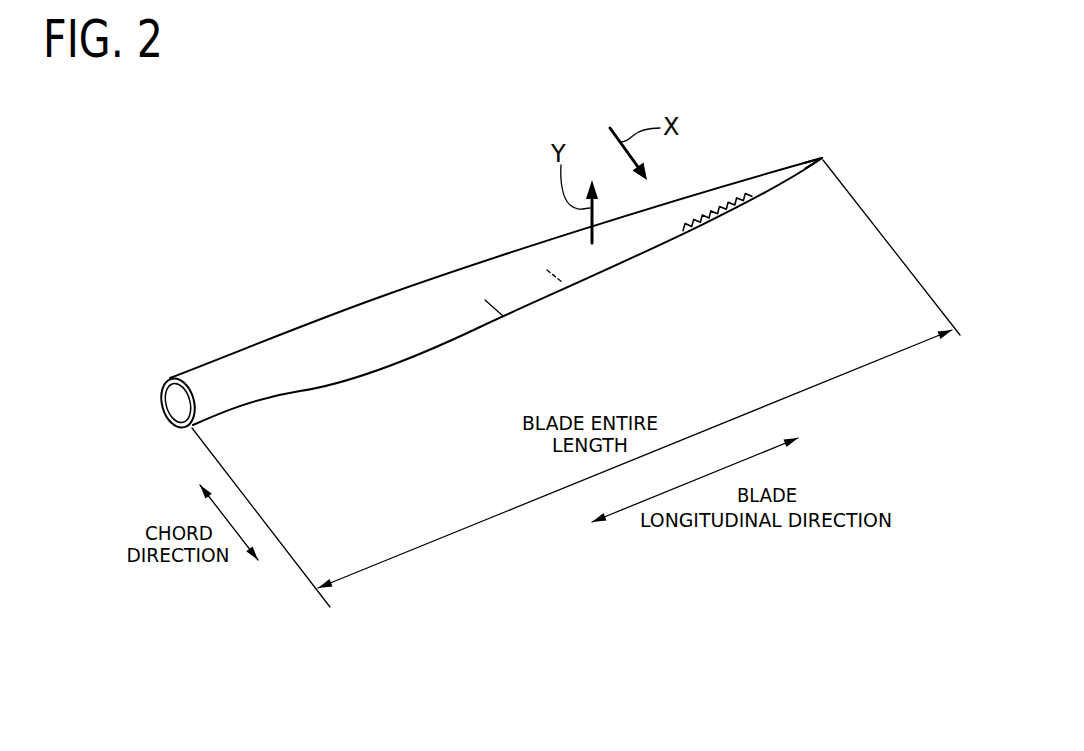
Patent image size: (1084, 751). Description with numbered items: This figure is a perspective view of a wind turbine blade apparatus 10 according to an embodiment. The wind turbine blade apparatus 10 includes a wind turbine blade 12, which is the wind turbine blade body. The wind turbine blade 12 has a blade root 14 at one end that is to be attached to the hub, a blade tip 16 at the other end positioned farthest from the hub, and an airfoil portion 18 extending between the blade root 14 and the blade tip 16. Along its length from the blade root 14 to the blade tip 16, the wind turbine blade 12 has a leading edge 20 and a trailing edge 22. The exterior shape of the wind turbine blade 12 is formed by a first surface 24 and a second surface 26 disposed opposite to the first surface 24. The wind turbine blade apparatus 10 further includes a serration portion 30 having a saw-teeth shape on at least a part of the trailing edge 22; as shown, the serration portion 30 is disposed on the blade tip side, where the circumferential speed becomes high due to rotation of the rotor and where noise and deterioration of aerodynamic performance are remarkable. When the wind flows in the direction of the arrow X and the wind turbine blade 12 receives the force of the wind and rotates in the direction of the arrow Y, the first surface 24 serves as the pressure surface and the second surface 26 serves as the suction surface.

The wind turbine blade apparatus 10 is at (441, 131).
The wind turbine blade 12 is at (531, 237).
The blade root 14 is at (163, 382).
The blade tip 16 is at (823, 158).
The airfoil portion 18 is at (344, 309).
The leading edge 20 is at (468, 266).
The trailing edge 22 is at (519, 309).
The first surface 24 is at (562, 282).
The second surface 26 is at (503, 316).
The serration portion 30 is at (722, 217).